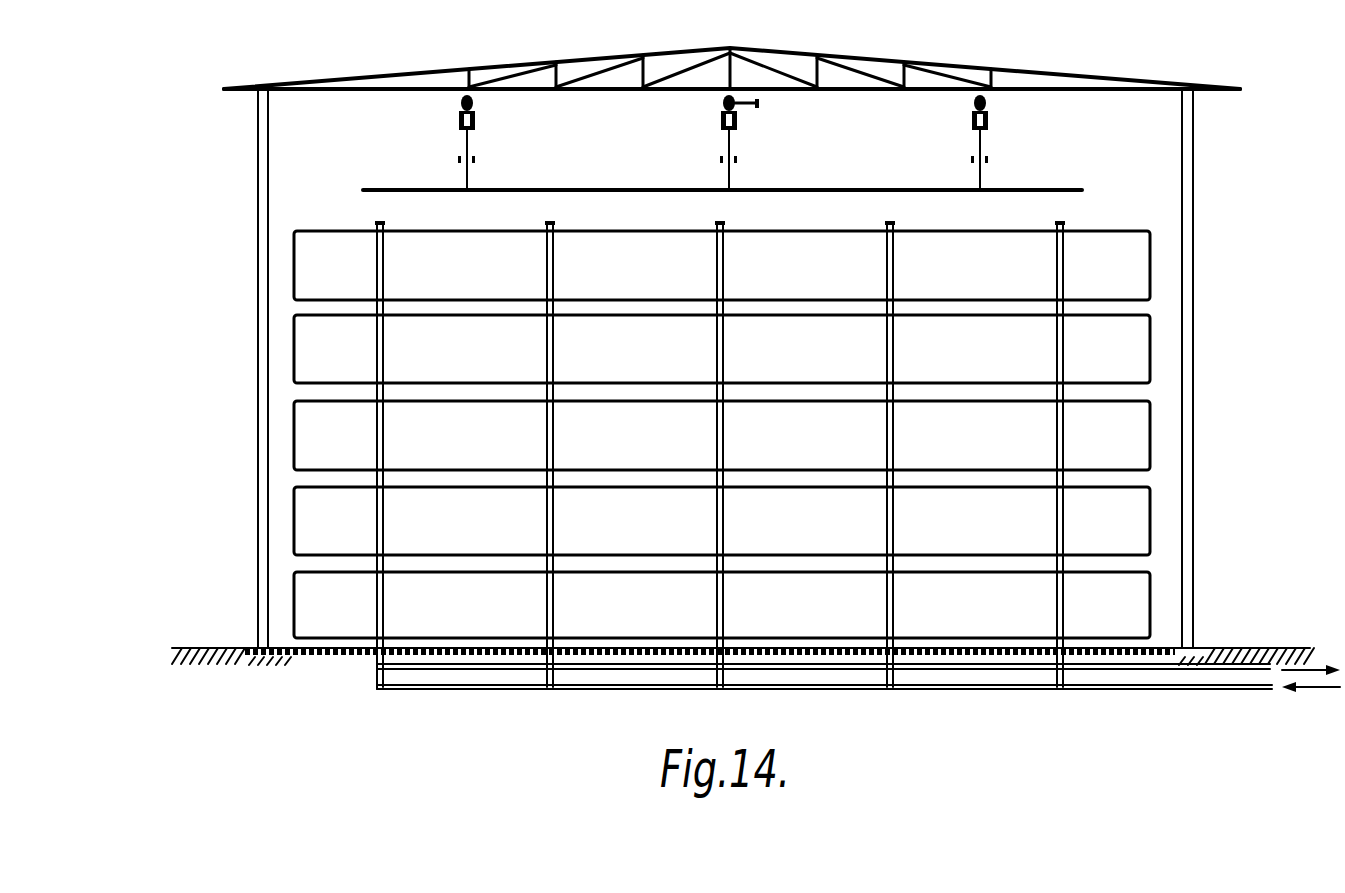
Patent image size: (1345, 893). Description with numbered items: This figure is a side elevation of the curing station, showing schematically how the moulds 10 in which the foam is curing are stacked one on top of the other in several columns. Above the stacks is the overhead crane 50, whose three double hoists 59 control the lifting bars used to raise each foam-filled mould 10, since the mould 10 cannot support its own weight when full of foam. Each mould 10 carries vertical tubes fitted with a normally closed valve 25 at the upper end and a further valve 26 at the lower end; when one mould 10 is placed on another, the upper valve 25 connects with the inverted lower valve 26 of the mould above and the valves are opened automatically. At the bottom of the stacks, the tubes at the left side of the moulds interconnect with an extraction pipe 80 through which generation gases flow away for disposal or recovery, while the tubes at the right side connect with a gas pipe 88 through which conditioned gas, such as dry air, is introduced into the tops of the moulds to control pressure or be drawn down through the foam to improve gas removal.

The mould 10 is at (989, 279).
The valve 25 is at (547, 233).
The valve 26 is at (385, 299).
The overhead crane 50 is at (688, 42).
The double hoists 59 is at (476, 122).
The extraction pipe 80 is at (452, 688).
The gas pipe 88 is at (632, 688).